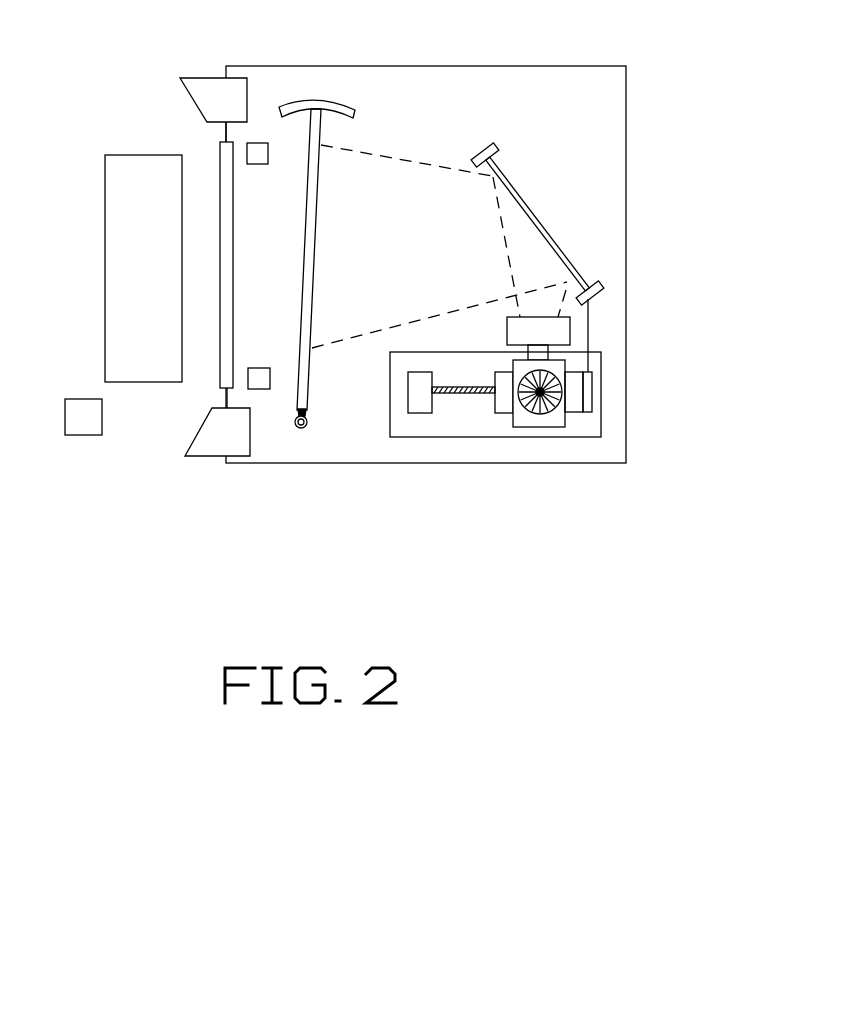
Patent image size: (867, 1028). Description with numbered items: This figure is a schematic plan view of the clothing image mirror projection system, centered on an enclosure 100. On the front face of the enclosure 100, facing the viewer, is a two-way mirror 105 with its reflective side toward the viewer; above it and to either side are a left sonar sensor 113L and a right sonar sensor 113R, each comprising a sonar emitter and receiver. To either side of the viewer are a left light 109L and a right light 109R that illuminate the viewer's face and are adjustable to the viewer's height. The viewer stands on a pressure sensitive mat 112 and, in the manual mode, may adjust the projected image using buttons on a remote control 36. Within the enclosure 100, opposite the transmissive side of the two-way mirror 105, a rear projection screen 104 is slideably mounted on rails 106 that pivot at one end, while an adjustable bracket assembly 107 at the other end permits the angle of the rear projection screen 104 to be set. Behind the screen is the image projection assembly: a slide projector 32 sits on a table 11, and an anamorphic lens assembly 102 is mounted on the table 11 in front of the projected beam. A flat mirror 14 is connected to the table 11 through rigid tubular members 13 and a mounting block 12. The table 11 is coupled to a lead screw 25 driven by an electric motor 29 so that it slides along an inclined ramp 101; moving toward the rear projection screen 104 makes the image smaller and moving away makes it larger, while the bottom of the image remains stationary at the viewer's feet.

The enclosure 100 is at (543, 66).
The ramp 101 is at (480, 437).
The anamorphic lens assembly 102 is at (570, 332).
The rear projection screen 104 is at (307, 393).
The two-way mirror 105 is at (219, 377).
The rails 106 is at (295, 424).
The adjustable bracket assembly 107 is at (304, 100).
The left light 109L is at (199, 78).
The right light 109R is at (198, 430).
The table 11 is at (575, 413).
The pressure sensitive mat 112 is at (138, 155).
The left sonar sensor 113L is at (259, 143).
The right sonar sensor 113R is at (265, 389).
The mounting block 12 is at (593, 402).
The rigid tubular members 13 is at (589, 325).
The flat mirror 14 is at (560, 240).
The lead screw 25 is at (448, 395).
The electric motor 29 is at (420, 413).
The slide projector 32 is at (537, 427).
The remote control 36 is at (87, 436).